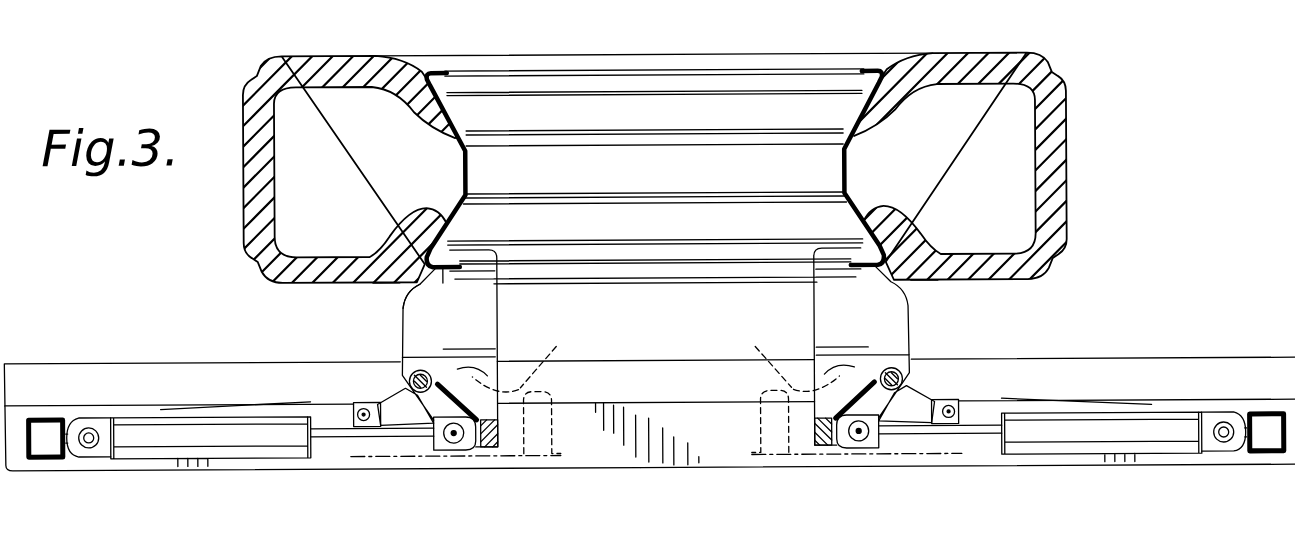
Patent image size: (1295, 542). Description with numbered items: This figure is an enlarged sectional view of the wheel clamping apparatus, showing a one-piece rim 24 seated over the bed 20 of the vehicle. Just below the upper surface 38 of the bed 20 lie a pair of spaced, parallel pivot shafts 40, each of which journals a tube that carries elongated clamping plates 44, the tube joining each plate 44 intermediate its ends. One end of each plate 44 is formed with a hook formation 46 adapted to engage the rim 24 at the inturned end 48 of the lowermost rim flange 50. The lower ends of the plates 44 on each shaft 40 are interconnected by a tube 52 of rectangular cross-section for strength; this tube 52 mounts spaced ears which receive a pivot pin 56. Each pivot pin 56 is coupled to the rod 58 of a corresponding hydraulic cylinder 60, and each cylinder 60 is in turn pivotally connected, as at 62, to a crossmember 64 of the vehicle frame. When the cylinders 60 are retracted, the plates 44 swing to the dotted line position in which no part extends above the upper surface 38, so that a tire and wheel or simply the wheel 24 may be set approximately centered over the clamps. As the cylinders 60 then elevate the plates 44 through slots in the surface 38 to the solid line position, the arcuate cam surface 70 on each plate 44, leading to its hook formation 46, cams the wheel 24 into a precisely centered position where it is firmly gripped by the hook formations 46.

The bed 20 is at (896, 387).
The one-piece rim 24 is at (655, 150).
The upper surface of the bed 38 is at (322, 389).
The pivot shaft 40 is at (636, 354).
The clamping plate 44 is at (656, 378).
The hook formation 46 is at (654, 166).
The inturned end 48 is at (450, 291).
The lowermost rim flange 50 is at (387, 306).
The tube 52 is at (656, 445).
The pivot pin 56 is at (657, 462).
The rod 58 is at (657, 454).
The hydraulic cylinder 60 is at (655, 415).
The pivotal connection 62 is at (655, 408).
The crossmember 64 is at (656, 468).
The arcuate cam surface 70 is at (652, 342).